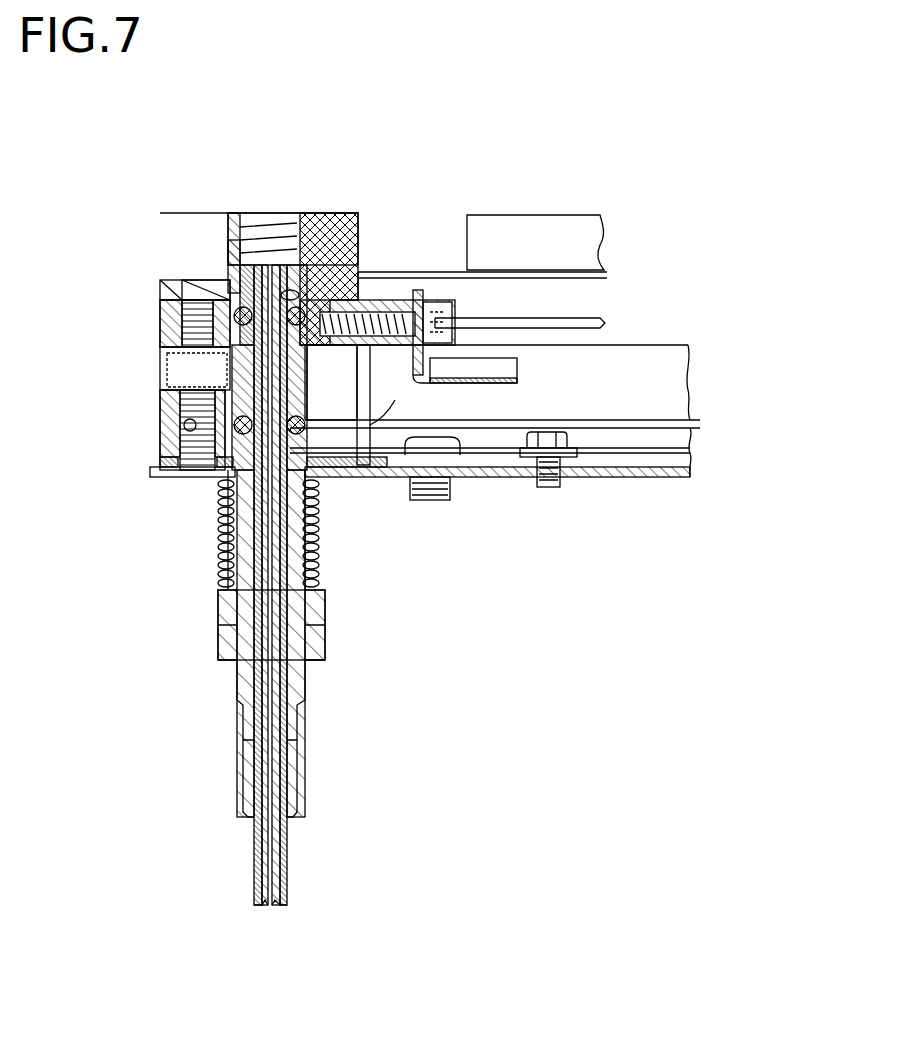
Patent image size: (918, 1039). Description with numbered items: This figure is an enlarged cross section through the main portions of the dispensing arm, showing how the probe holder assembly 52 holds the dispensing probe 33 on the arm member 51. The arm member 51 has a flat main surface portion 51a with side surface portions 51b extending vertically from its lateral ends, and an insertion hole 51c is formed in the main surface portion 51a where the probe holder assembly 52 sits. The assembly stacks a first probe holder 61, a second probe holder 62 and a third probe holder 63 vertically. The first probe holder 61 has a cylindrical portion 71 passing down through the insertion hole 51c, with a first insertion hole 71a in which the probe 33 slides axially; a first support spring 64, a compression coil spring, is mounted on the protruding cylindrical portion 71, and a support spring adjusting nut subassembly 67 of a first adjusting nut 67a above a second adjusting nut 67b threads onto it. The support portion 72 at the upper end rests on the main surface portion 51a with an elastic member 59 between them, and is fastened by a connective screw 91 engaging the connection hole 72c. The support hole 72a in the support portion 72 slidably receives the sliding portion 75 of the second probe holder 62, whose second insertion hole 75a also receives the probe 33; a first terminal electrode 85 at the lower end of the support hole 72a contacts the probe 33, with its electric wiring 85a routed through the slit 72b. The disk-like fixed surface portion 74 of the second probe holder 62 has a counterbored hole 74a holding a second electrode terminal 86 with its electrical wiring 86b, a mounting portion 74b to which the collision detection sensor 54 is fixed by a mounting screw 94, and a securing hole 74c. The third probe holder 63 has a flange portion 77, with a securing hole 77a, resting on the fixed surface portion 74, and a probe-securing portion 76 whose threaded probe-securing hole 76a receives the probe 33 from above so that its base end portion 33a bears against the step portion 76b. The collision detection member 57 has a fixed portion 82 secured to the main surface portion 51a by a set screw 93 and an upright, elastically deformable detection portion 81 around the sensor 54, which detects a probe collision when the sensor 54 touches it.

The dispensing probe 33 is at (236, 869).
The base end portion 33a is at (300, 288).
The arm member 51 is at (690, 440).
The main surface portion 51a is at (640, 477).
The side surface portion 51b is at (688, 372).
The insertion hole 51c is at (330, 495).
The probe holder assembly 52 is at (262, 188).
The collision detection sensor 54 is at (418, 290).
The collision detection member 57 is at (395, 290).
The elastic member 59 is at (168, 482).
The first probe holder 61 is at (177, 440).
The second probe holder 62 is at (172, 340).
The third probe holder 63 is at (228, 245).
The first support spring 64 is at (228, 578).
The support spring adjusting nut subassembly 67 is at (248, 625).
The first adjusting nut 67a is at (325, 620).
The second adjusting nut 67b is at (325, 650).
The cylindrical portion 71 is at (237, 695).
The first insertion hole 71a is at (265, 745).
The support portion 72 is at (165, 455).
The support hole 72a is at (185, 402).
The slit 72b is at (357, 470).
The connection hole 72c is at (180, 420).
The fixed surface portion 74 is at (165, 298).
The counterbored hole 74a is at (224, 275).
The mounting portion 74b is at (335, 365).
The securing hole 74c is at (177, 322).
The sliding portion 75 is at (175, 375).
The second insertion hole 75a is at (440, 385).
The probe-securing portion 76 is at (284, 230).
The probe-securing hole 76a is at (283, 213).
The step portion 76b is at (250, 213).
The flange portion 77 is at (178, 282).
The securing hole 77a is at (215, 270).
The detection portion 81 is at (380, 400).
The fixed portion 82 is at (470, 462).
The first terminal electrode 85 is at (318, 538).
The electric wiring 85a is at (512, 477).
The second electrode terminal 86 is at (330, 310).
The electrical wiring 86b is at (590, 320).
The connective screw 91 is at (188, 492).
The set screw 93 is at (550, 487).
The mounting screw 94 is at (435, 305).